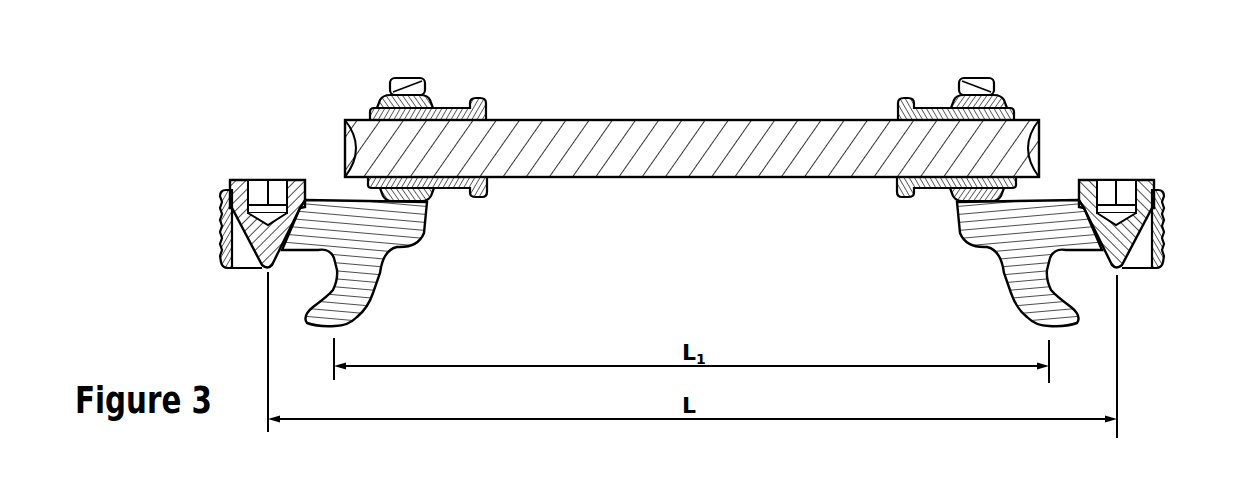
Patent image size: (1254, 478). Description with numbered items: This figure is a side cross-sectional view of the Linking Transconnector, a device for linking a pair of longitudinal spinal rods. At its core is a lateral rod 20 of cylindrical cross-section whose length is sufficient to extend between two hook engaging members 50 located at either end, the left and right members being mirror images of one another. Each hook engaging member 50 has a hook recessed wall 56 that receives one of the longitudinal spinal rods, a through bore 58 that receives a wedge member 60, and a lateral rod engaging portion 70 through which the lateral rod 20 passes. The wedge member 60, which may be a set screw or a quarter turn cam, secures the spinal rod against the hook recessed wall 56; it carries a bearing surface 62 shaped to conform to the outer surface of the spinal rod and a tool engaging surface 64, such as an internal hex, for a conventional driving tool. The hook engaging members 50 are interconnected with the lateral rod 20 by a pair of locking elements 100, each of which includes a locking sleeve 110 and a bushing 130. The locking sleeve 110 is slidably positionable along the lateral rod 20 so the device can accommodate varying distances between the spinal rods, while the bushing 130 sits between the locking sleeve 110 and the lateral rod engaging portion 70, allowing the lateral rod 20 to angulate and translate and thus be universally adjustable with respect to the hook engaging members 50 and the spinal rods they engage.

The lateral rod 20 is at (720, 177).
The hook engaging member 50 is at (360, 254).
The hook recessed wall 56 is at (1069, 278).
The through bore 58 is at (238, 277).
The wedge member 60 is at (1161, 177).
The bearing surface 62 is at (1158, 262).
The tool engaging surface 64 is at (1112, 178).
The lateral rod engaging portion 70 is at (965, 66).
The locking element 100 is at (454, 205).
The locking sleeve 110 is at (471, 99).
The bushing 130 is at (386, 87).